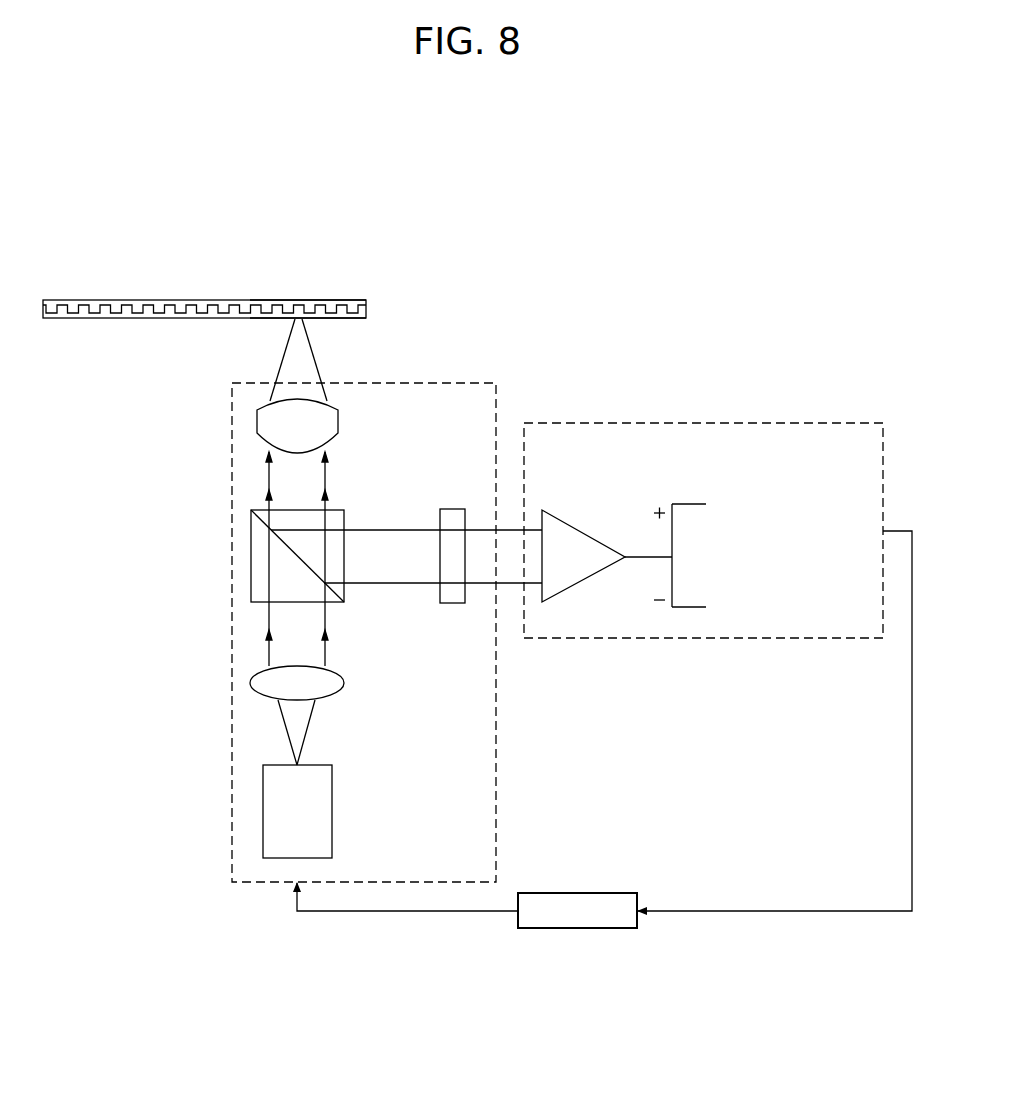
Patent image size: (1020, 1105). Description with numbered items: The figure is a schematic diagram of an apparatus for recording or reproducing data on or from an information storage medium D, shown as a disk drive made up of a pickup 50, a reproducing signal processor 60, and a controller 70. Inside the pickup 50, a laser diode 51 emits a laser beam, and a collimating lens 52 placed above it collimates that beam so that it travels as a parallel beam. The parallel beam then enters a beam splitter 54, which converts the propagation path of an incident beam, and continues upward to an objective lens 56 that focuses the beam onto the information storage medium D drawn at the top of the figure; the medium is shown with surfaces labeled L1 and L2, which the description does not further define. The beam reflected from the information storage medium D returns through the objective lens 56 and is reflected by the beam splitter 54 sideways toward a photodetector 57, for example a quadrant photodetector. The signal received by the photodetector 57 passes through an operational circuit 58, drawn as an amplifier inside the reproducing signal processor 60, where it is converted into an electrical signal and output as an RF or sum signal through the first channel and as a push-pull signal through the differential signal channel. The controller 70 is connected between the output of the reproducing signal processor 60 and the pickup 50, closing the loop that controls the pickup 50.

The information storage medium D is at (204, 274).
The first layer (land/groove surface) L1 is at (335, 331).
The second layer L2 is at (334, 297).
The pickup 50 is at (318, 632).
The laser diode 51 is at (263, 810).
The collimating lens 52 is at (269, 683).
The beam splitter 54 is at (265, 556).
The objective lens 56 is at (268, 426).
The photodetector 57 is at (452, 517).
The operational circuit 58 is at (583, 526).
The reproducing signal processor 60 is at (703, 489).
The controller 70 is at (577, 866).